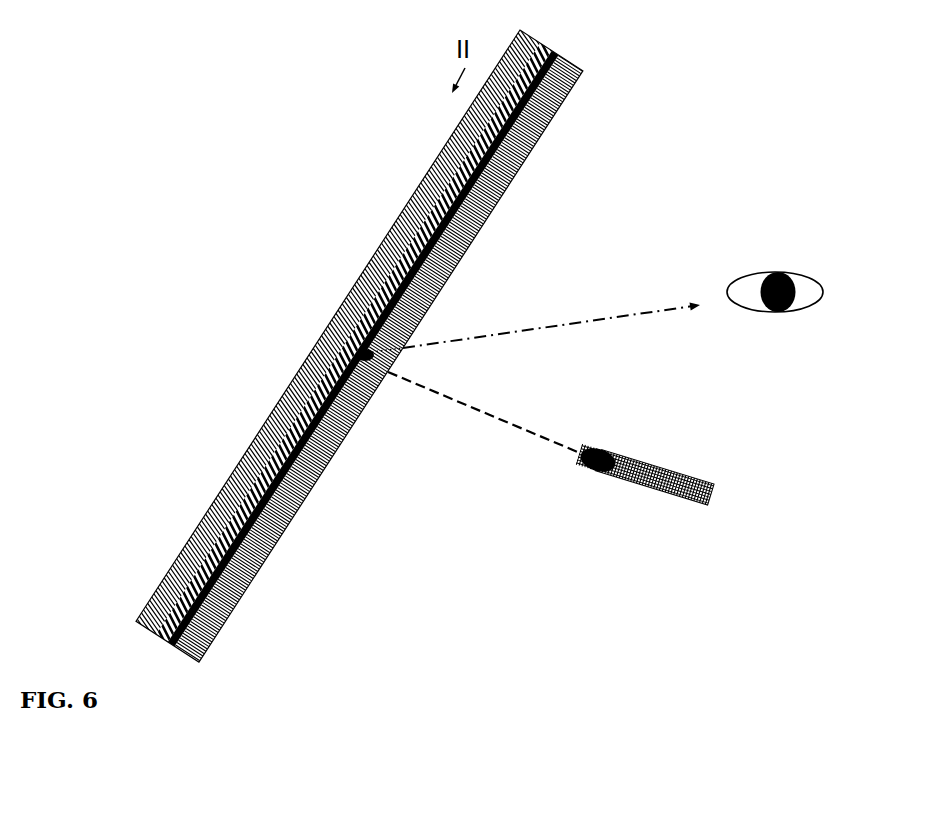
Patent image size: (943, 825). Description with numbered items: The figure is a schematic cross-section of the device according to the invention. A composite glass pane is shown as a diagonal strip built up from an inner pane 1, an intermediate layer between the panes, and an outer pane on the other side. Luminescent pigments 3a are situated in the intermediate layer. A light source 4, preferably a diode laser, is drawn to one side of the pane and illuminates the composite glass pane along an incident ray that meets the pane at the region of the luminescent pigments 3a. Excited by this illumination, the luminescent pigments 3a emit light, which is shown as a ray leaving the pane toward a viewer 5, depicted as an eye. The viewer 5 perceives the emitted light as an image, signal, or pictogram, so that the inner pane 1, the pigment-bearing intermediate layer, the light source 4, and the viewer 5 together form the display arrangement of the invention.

The inner pane 1 is at (354, 353).
The first luminescent pigment or dye 3a is at (352, 350).
The light source 4 is at (646, 508).
The viewer 5 is at (785, 264).